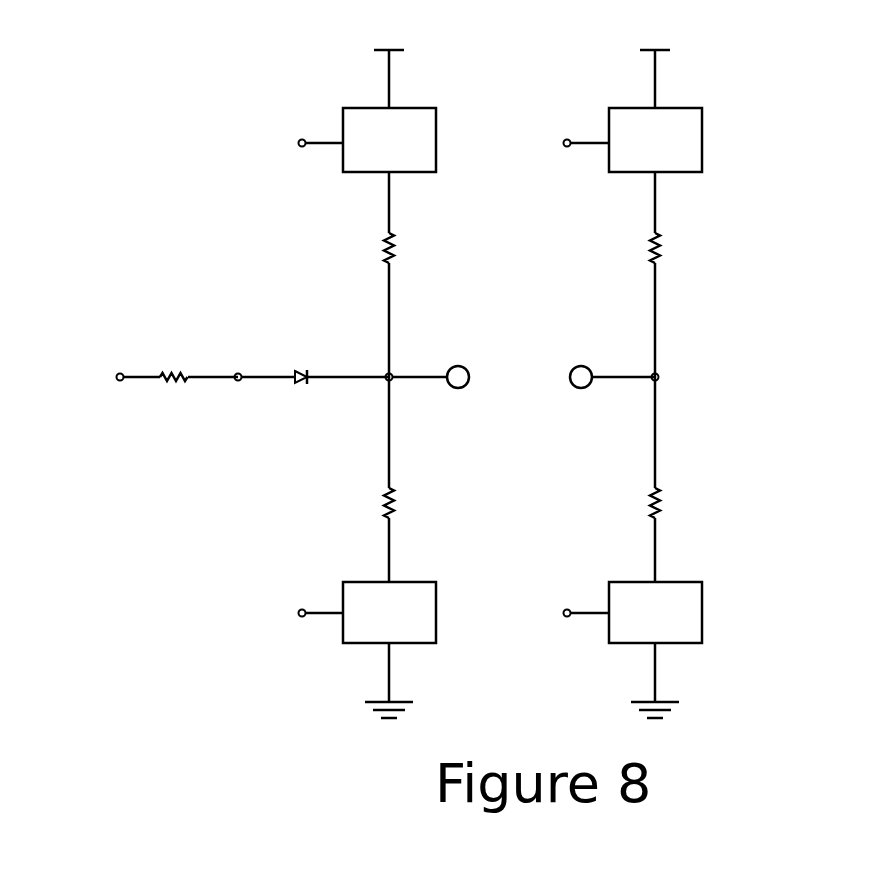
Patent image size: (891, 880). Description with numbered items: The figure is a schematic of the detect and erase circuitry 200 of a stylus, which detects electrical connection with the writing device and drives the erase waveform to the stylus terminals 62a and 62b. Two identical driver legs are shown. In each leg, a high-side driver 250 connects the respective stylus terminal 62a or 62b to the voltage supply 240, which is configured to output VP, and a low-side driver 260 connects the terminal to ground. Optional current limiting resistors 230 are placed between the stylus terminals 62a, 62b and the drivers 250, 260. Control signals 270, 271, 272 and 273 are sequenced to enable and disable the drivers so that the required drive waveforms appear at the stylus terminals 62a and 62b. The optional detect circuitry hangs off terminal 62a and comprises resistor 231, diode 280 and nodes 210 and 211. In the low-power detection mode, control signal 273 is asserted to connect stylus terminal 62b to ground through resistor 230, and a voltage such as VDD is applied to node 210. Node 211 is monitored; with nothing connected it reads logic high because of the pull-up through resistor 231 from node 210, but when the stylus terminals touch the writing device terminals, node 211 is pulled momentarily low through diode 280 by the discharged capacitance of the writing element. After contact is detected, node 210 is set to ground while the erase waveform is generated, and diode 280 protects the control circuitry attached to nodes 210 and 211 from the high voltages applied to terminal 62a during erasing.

The detect and erase circuitry 200 is at (805, 126).
The voltage supply 240 is at (521, 61).
The high-side drivers 250 is at (522, 140).
The low-side drivers 260 is at (522, 650).
The current limiting resistors 230 is at (489, 377).
The control signal 270 is at (290, 142).
The control signal 271 is at (555, 142).
The control signal 272 is at (290, 612).
The control signal 273 is at (555, 612).
The node 210 is at (107, 376).
The resistor 231 is at (191, 359).
The node 211 is at (252, 394).
The diode 280 is at (331, 359).
The stylus terminal 62a is at (439, 359).
The stylus terminal 62b is at (605, 359).